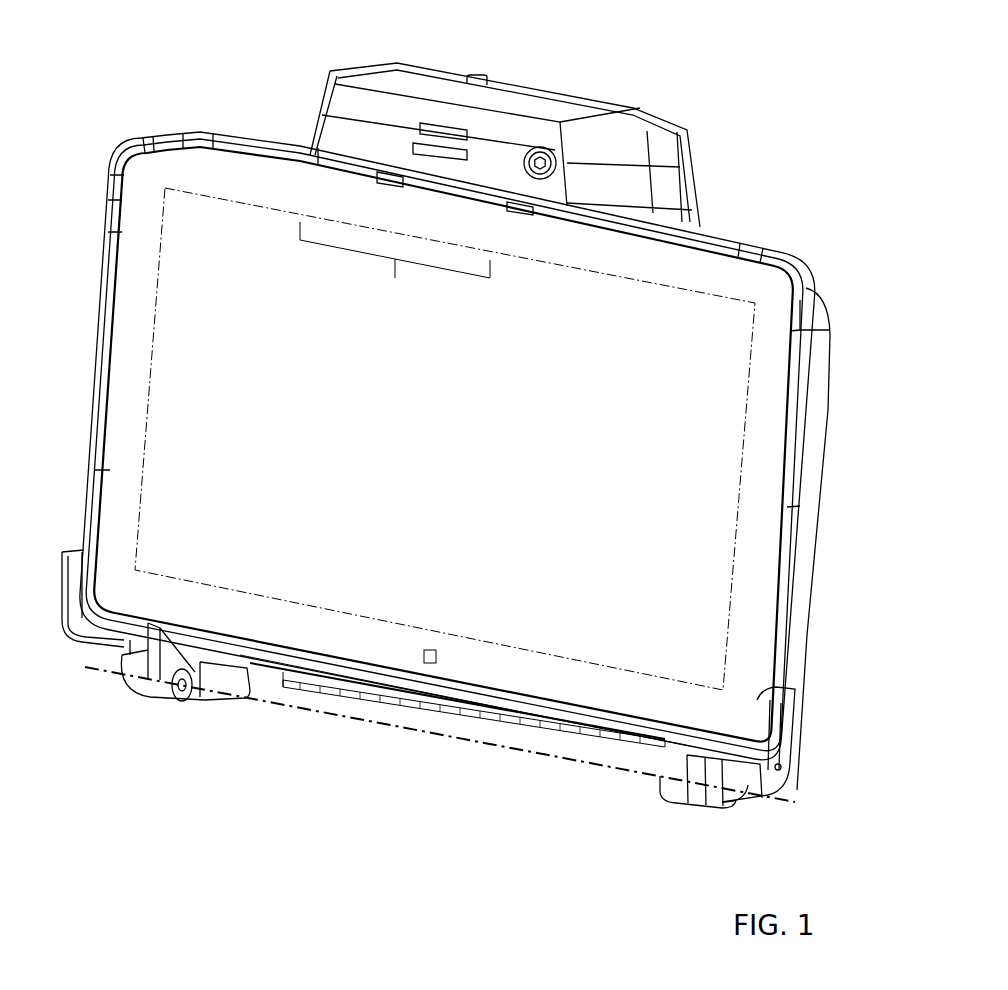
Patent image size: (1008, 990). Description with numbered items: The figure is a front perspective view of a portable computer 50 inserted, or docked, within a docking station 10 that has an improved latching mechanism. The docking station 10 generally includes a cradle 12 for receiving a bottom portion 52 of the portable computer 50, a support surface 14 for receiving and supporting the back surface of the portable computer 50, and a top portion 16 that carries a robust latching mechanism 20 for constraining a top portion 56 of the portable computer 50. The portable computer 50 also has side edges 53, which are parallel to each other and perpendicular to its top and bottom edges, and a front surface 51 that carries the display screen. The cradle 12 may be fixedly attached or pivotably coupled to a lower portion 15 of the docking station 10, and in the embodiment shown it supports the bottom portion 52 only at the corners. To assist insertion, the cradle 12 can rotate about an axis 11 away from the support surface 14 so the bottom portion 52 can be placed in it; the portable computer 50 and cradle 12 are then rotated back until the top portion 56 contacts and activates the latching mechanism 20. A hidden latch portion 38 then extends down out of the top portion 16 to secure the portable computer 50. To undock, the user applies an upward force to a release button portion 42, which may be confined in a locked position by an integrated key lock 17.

The docking station 10 is at (679, 88).
The axis 11 is at (254, 708).
The cradle 12 is at (72, 641).
The support surface 14 is at (818, 522).
The lower portion 15 is at (720, 812).
The top portion 16 is at (421, 66).
The key lock 17 is at (536, 140).
The latching mechanism 20 is at (395, 263).
The latch portion 38 is at (390, 184).
The release button portion 42 is at (446, 162).
The portable computer 50 is at (443, 447).
The front surface 51 is at (197, 311).
The bottom portion 52 is at (411, 687).
The side edges 53 is at (103, 347).
The top portion 56 is at (752, 250).